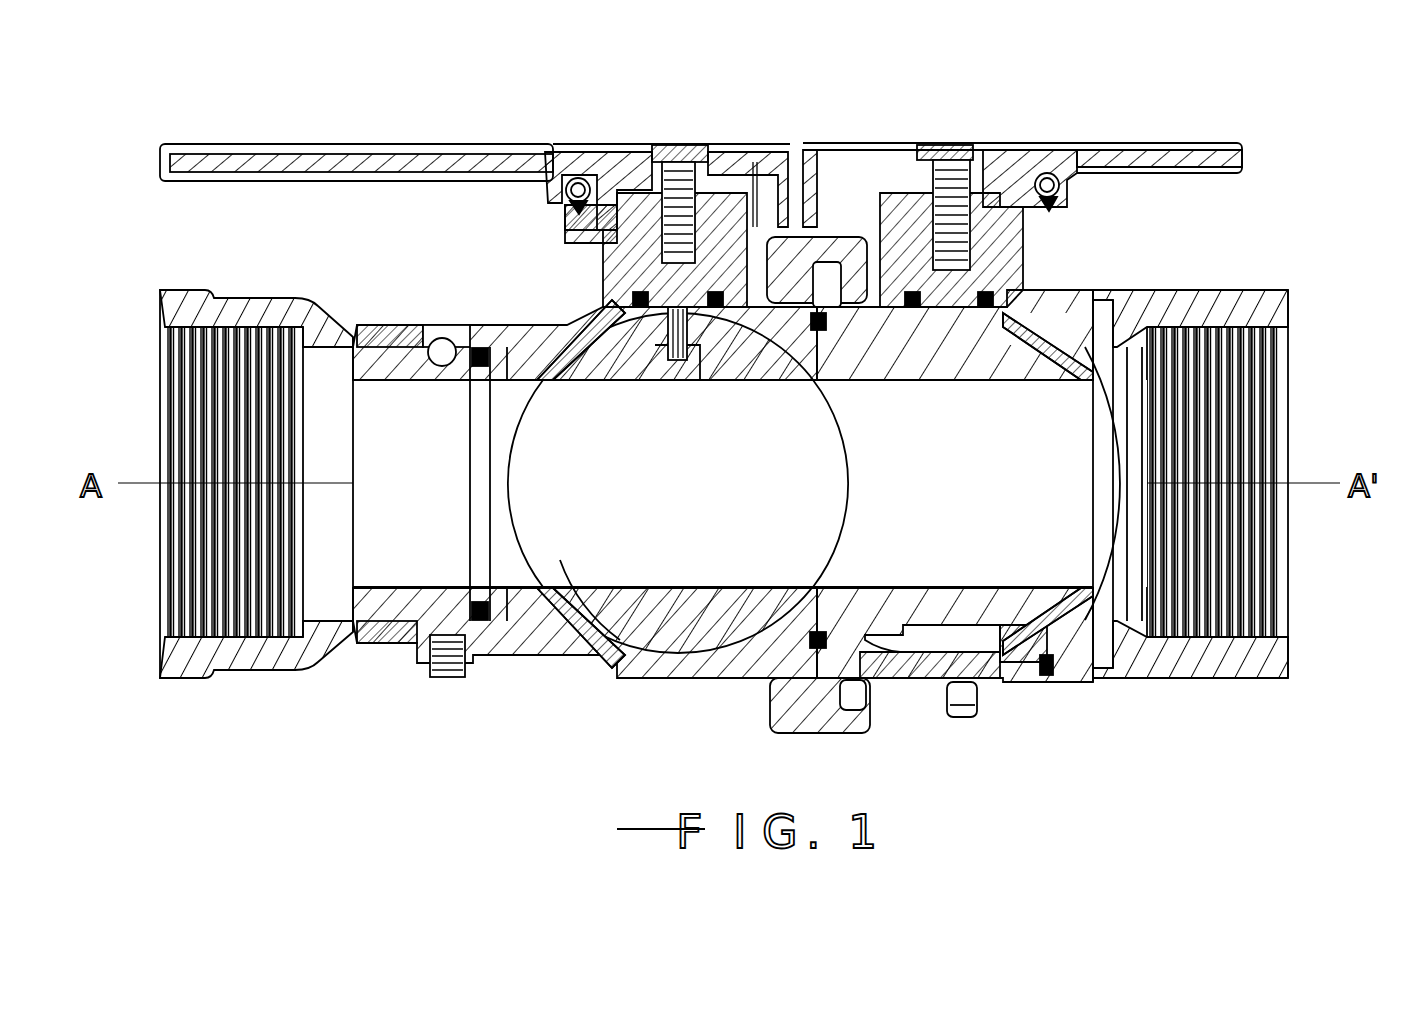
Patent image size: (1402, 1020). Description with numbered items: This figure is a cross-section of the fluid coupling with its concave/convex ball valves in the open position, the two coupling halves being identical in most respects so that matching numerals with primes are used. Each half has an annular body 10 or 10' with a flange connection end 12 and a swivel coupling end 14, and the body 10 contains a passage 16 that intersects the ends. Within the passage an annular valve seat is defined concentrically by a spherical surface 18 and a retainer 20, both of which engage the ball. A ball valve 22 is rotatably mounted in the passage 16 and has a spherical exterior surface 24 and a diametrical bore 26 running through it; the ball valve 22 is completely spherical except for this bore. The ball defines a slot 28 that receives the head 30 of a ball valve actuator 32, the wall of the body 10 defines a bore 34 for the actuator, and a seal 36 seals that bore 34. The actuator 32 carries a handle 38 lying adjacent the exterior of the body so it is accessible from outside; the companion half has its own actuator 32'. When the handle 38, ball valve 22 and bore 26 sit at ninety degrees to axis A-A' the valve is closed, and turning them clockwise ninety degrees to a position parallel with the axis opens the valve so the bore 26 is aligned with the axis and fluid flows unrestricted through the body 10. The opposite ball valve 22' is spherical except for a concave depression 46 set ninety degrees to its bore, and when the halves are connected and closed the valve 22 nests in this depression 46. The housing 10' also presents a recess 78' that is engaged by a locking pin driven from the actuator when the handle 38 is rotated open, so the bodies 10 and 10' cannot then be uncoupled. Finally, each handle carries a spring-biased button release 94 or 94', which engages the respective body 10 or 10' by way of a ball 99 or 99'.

The annular body 10 is at (585, 527).
The annular body 10' is at (966, 527).
The flange connection end 12 is at (857, 697).
The swivel coupling end 14 is at (248, 298).
The passage 16 is at (590, 330).
The spherical surface 18 is at (560, 318).
The retainer 20 is at (528, 648).
The ball valve 22 is at (750, 483).
The ball valve 22' is at (992, 484).
The spherical exterior surface 24 is at (535, 378).
The diametrical bore 26 is at (598, 580).
The slot 28 is at (605, 300).
The head 30 is at (658, 385).
The ball valve actuator 32 is at (701, 167).
The ball valve actuator 32' is at (992, 170).
The bore 34 is at (757, 210).
The seal 36 is at (693, 310).
The handle 38 is at (160, 144).
The concave depression 46 is at (845, 533).
The recess 78' is at (839, 211).
The handle button release 94 is at (598, 129).
The handle button release 94' is at (1112, 131).
The ball 99 is at (528, 195).
The ball 99' is at (1120, 223).